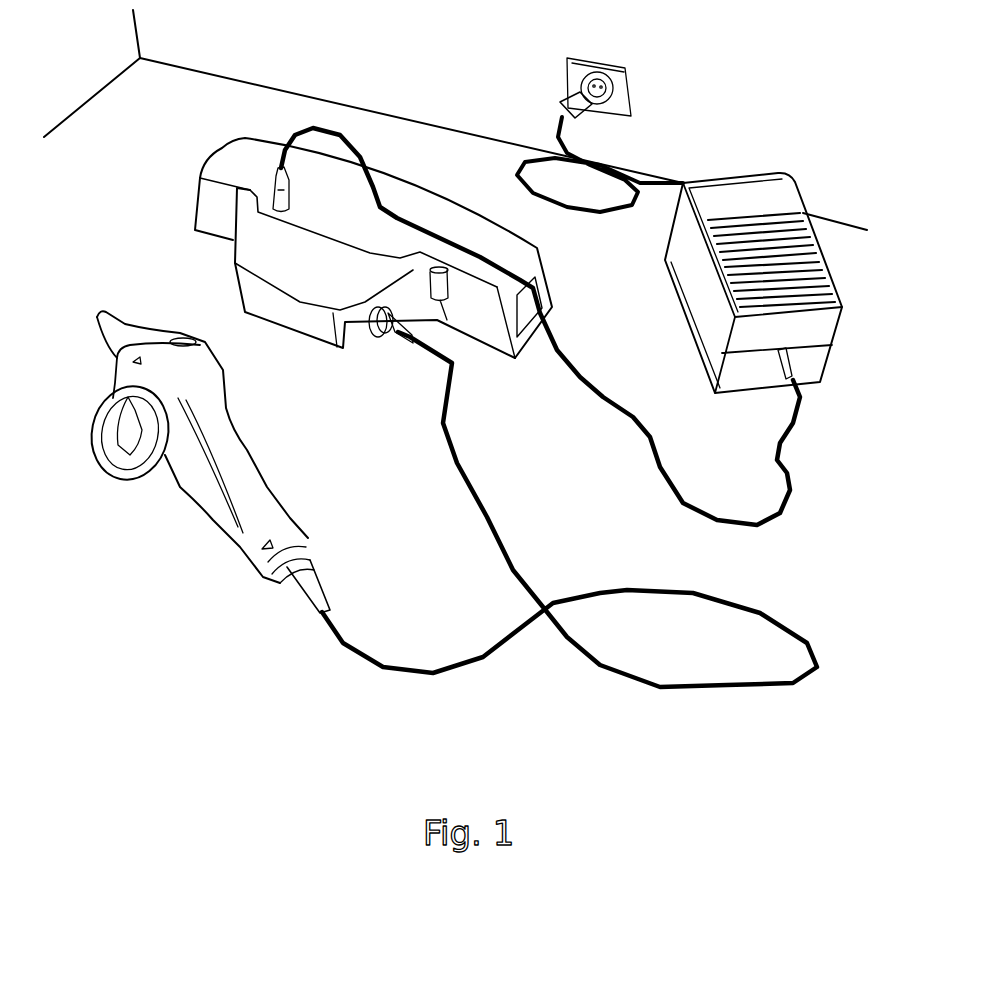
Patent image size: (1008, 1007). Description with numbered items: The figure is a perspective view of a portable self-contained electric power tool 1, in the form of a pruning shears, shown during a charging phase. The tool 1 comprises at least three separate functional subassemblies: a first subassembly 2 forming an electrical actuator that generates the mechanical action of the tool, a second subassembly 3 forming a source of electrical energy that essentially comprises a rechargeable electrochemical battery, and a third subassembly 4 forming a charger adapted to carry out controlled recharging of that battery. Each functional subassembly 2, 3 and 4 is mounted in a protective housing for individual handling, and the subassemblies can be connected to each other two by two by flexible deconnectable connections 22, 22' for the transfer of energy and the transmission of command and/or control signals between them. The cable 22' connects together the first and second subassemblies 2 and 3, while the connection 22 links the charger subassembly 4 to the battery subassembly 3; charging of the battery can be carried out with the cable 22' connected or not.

The portable self-contained electric power tool 1 is at (219, 768).
The first subassembly 2 is at (147, 307).
The second subassembly 3 is at (204, 147).
The third subassembly 4 is at (808, 173).
The flexible deconnectable connection 22 is at (573, 341).
The flexible deconnectable connection 22' is at (569, 547).